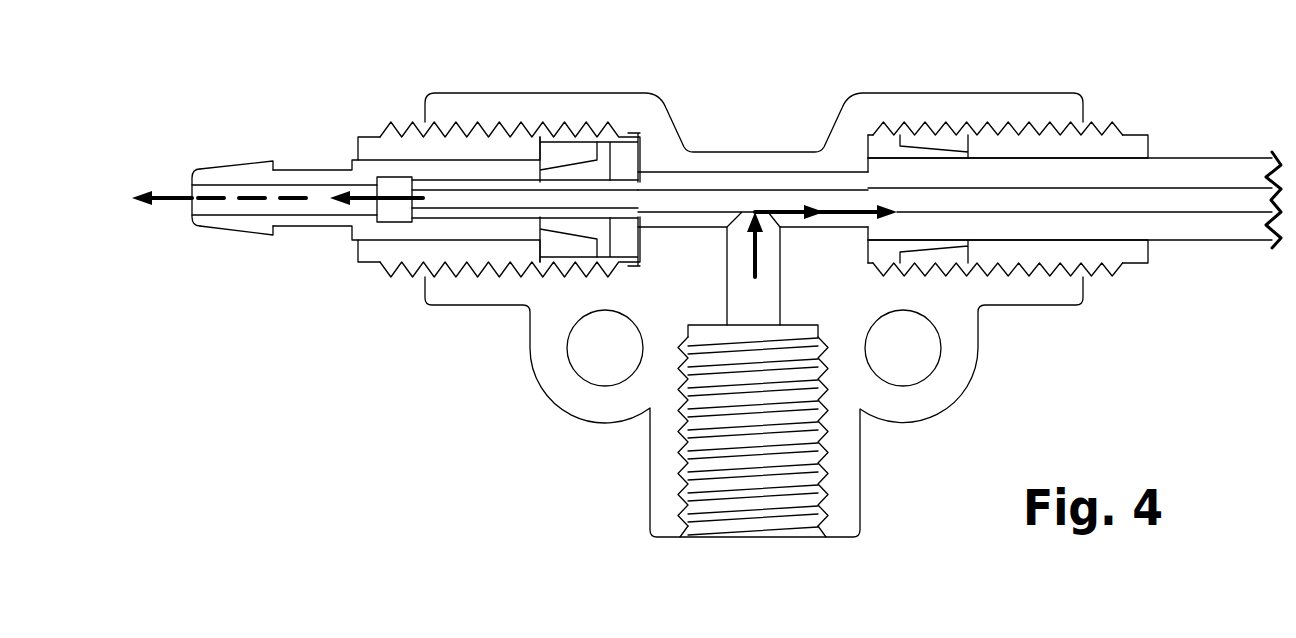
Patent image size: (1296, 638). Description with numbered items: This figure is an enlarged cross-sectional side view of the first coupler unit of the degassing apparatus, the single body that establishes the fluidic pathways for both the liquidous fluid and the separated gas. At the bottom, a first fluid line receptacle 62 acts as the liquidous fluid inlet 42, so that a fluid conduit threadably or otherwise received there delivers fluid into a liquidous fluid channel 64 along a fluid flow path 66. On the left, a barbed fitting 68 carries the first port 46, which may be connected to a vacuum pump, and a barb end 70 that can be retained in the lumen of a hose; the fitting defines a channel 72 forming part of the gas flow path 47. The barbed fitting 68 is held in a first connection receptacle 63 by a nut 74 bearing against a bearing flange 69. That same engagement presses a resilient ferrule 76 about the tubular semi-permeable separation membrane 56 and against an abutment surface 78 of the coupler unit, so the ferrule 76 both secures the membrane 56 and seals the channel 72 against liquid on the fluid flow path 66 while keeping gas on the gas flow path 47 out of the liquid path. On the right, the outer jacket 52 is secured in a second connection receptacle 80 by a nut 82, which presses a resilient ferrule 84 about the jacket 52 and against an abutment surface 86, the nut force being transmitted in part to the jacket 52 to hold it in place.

The liquidous fluid inlet 42 is at (787, 543).
The first port 46 is at (192, 190).
The gas flow path 47 is at (175, 200).
The outer jacket 52 is at (1186, 175).
The tubular semi-permeable separation membrane 56 is at (428, 213).
The first fluid line receptacle 62 is at (697, 535).
The first connection receptacle 63 is at (450, 125).
The liquidous fluid channel 64 is at (762, 297).
The fluid flow path 66 is at (757, 248).
The barbed fitting 68 is at (318, 167).
The bearing flange 69 is at (550, 135).
The barb end 70 is at (263, 233).
The channel 72 is at (223, 207).
The nut 74 is at (412, 143).
The resilient ferrule 76 is at (630, 237).
The abutment surface 78 is at (640, 150).
The second connection receptacle 80 is at (1023, 130).
The nut 82 is at (1110, 127).
The resilient ferrule 84 is at (917, 152).
The abutment surface 86 is at (868, 148).